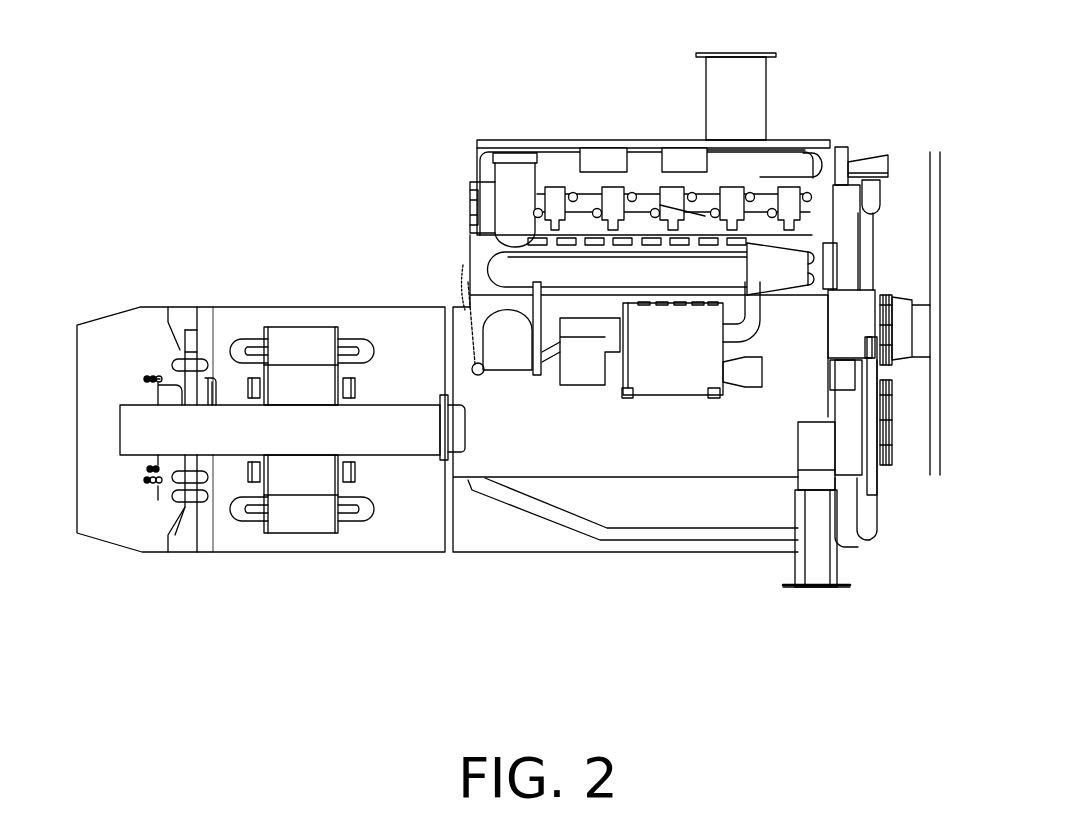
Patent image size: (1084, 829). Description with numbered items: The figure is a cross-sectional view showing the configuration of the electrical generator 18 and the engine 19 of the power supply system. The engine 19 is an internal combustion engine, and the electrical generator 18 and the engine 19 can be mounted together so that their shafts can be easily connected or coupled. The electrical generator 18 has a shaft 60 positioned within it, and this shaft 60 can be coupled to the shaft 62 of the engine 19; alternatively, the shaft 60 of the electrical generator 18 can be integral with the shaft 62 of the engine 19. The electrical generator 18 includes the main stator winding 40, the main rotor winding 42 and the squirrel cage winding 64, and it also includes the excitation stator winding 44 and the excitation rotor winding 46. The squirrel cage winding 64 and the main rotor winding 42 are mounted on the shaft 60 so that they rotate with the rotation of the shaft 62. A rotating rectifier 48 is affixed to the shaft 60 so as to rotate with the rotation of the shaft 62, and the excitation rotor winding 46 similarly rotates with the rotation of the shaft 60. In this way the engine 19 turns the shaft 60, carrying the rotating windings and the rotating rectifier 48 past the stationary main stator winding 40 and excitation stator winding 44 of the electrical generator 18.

The electrical generator 18 is at (261, 244).
The engine 19 is at (835, 80).
The main stator winding 40 is at (343, 350).
The main rotor winding 42 is at (360, 388).
The excitation stator winding 44 is at (175, 348).
The excitation rotor winding 46 is at (165, 378).
The rotating rectifier 48 is at (146, 480).
The shaft 60 is at (132, 426).
The shaft 62 is at (457, 428).
The squirrel cage winding 64 is at (285, 382).